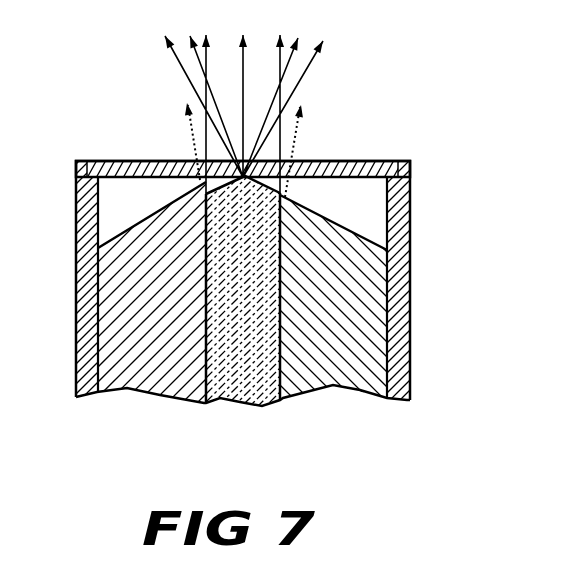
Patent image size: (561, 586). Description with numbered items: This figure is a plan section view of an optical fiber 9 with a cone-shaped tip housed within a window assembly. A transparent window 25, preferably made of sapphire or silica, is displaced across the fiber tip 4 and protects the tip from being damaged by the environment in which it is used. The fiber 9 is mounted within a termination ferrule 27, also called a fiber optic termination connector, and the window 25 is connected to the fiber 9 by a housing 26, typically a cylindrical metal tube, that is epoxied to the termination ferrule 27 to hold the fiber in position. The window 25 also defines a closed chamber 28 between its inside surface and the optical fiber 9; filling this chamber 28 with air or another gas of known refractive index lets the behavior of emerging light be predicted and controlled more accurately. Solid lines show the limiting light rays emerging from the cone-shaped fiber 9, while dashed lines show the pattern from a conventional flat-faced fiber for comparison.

The fiber tip 4 is at (230, 176).
The optical fiber 9 is at (240, 387).
The transparent window 25 is at (342, 162).
The housing 26 is at (400, 285).
The termination ferrule 27 is at (142, 375).
The closed chamber 28 is at (148, 197).